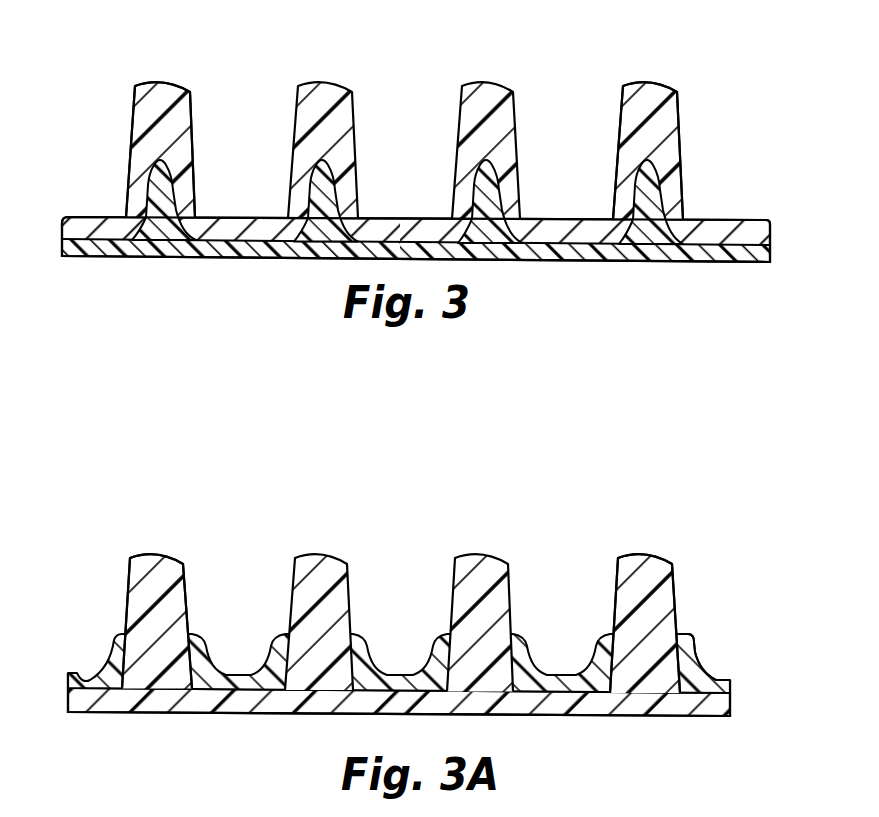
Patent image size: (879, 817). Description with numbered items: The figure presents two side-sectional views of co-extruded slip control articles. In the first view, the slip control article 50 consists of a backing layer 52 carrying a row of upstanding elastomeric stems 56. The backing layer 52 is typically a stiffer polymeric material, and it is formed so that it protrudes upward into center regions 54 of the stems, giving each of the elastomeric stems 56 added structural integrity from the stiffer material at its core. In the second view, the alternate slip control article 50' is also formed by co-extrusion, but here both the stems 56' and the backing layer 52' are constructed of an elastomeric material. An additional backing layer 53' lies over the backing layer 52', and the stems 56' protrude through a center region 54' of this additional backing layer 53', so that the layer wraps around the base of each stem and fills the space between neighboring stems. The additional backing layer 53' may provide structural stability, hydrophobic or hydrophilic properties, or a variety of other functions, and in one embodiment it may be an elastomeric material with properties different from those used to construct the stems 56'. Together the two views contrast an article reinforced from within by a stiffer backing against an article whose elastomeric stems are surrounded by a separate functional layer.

In FIG. 3, the slip control article 50 is at (416, 134).
In FIG. 3, the backing layer 52 is at (415, 269).
In FIG. 3, the center regions 54 is at (379, 185).
In FIG. 3, the elastomeric stems 56 is at (392, 111).
In FIG. 3A, the slip control article 50' is at (399, 596).
In FIG. 3A, the backing layer 52' is at (399, 719).
In FIG. 3A, the additional backing layer 53' is at (720, 644).
In FIG. 3A, the center region 54' is at (385, 643).
In FIG. 3A, the stems 56' is at (389, 583).